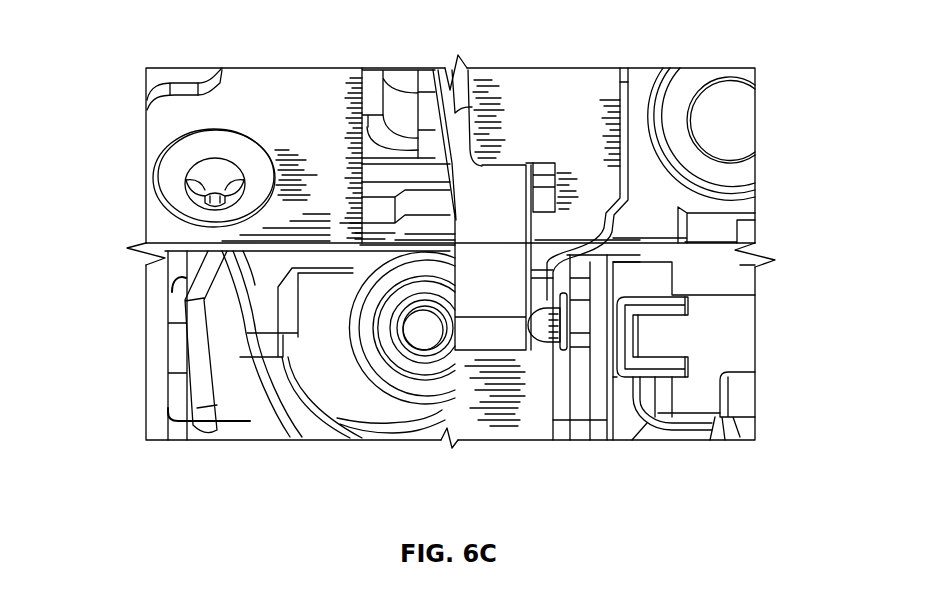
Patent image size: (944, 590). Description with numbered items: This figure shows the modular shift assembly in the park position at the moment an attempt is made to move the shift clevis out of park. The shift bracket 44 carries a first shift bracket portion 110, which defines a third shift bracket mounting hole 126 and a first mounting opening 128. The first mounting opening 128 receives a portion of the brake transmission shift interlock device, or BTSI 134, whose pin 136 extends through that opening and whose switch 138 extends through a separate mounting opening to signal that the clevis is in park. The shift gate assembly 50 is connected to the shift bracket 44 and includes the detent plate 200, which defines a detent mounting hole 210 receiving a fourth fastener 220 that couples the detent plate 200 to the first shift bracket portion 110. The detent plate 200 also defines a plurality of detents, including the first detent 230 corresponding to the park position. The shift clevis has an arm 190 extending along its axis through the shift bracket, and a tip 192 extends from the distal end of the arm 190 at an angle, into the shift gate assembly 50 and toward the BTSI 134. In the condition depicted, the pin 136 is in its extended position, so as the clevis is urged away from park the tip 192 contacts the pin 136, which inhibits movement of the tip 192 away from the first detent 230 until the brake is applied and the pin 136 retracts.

The shift gate assembly 50 is at (234, 64).
The detent plate 200 is at (283, 84).
The arm 190 is at (456, 72).
The tip 192 is at (475, 335).
The first detent 230 is at (548, 162).
The first shift bracket portion 110 is at (640, 92).
The third shift bracket mounting hole 126 is at (753, 78).
The detent mounting hole 210 is at (165, 150).
The fourth fastener 220 is at (180, 200).
The shift bracket 44 is at (279, 452).
The first mounting opening 128 is at (400, 358).
The pin 136 is at (427, 329).
The switch 138 is at (543, 327).
The brake transmission shift interlock device (BTSI) 134 is at (662, 442).